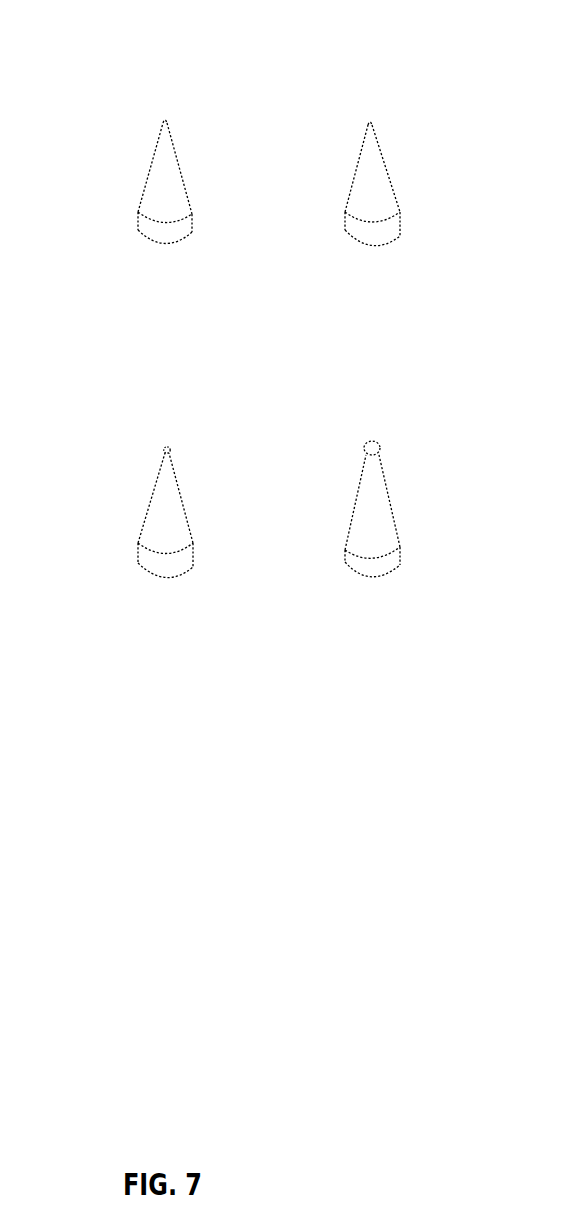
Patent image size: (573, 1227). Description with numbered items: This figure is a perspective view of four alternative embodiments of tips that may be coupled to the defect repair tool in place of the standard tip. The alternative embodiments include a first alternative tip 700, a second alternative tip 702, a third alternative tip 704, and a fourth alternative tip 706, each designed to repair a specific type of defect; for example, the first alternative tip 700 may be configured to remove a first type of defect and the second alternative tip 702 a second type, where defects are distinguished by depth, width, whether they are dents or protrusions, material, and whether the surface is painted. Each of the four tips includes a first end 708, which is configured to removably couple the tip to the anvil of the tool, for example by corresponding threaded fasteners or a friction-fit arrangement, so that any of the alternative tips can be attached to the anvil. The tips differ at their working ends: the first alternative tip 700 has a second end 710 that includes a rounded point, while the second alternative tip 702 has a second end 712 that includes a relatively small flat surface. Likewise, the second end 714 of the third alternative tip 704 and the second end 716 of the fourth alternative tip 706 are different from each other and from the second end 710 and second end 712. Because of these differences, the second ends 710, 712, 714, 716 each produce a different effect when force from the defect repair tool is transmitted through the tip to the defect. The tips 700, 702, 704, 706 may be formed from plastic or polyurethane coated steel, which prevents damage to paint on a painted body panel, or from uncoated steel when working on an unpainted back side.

The first alternative tip 700 is at (141, 115).
The second alternative tip 702 is at (436, 114).
The third alternative tip 704 is at (156, 445).
The fourth alternative tip 706 is at (432, 450).
The first end 708 is at (137, 220).
The second end 710 is at (164, 122).
The second end 712 is at (379, 123).
The second end 714 is at (164, 450).
The second end 716 is at (381, 448).